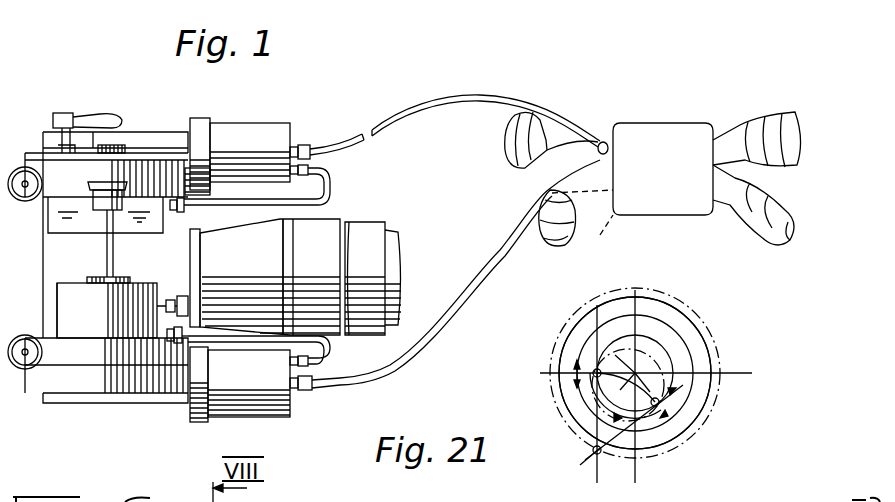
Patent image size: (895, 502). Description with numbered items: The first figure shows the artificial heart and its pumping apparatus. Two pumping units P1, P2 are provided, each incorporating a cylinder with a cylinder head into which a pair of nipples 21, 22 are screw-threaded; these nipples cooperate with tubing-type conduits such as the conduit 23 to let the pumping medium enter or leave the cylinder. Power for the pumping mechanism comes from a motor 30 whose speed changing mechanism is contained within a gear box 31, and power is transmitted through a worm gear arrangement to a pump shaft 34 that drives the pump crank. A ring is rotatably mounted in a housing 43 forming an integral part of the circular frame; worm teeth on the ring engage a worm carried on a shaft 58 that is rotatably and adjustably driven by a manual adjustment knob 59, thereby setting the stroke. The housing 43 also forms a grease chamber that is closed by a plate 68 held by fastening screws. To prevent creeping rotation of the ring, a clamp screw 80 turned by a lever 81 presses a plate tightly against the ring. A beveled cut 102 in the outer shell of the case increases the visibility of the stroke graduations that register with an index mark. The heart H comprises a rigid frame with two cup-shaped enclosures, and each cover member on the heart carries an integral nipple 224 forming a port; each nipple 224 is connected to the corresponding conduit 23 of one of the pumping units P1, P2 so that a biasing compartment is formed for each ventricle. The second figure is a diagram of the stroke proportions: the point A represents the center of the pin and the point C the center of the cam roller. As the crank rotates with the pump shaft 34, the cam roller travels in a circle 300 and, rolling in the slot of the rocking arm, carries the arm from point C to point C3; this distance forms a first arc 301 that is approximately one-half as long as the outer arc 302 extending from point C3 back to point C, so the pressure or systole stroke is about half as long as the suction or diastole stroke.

In FIG. 1, the clamp screw 80 is at (60, 130).
In FIG. 1, the lever 81 is at (104, 119).
In FIG. 1, the shaft 58 is at (25, 184).
In FIG. 1, the manual adjustment knob 59 is at (21, 201).
In FIG. 1, the beveled cut 102 is at (92, 187).
In FIG. 1, the plate 68 is at (78, 283).
In FIG. 1, the pump shaft 34 is at (113, 253).
In FIG. 1, the housing 43 is at (100, 319).
In FIG. 1, the pumping unit P2 is at (275, 122).
In FIG. 1, the pumping unit P1 is at (237, 422).
In FIG. 1, the nipple 21 is at (300, 148).
In FIG. 1, the nipple 22 is at (307, 167).
In FIG. 1, the tubing-type conduit 23 is at (413, 124).
In FIG. 1, the motor 30 is at (362, 223).
In FIG. 1, the gear box 31 is at (262, 260).
In FIG. 1, the nipple 224 is at (603, 140).
In FIG. 1, the heart H is at (671, 123).
In FIG. 21, the circle 300 is at (660, 343).
In FIG. 21, the first arc 301 is at (597, 455).
In FIG. 21, the outer arc 302 is at (643, 338).
In FIG. 21, the point C is at (607, 394).
In FIG. 21, the point C3 is at (660, 403).
In FIG. 21, the point A is at (595, 450).